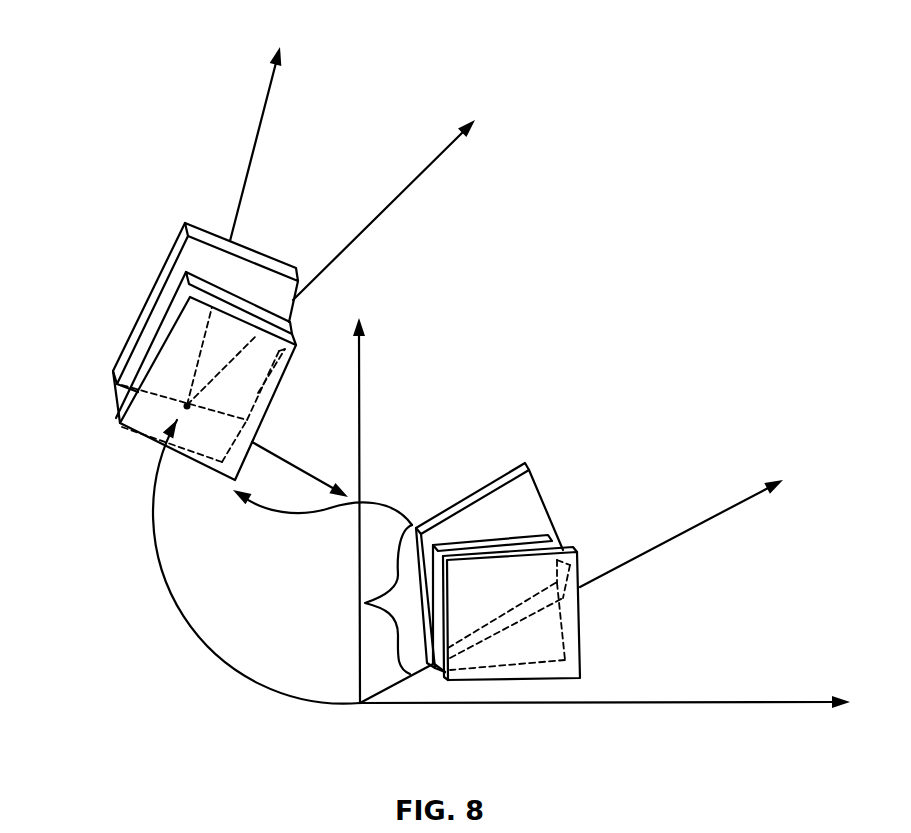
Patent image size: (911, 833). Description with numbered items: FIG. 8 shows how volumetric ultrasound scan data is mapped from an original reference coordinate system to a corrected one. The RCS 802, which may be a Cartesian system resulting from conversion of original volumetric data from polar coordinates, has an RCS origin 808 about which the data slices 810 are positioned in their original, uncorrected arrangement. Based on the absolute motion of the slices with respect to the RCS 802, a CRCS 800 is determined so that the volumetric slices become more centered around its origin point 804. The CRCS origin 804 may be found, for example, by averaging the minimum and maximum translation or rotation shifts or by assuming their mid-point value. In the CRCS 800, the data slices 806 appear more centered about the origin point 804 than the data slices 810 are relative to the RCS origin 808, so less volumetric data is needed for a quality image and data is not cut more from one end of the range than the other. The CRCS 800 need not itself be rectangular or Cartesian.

The corrected reference coordinate system (CRCS) 800 is at (145, 110).
The reference coordinate system (RCS) 802 is at (625, 452).
The CRCS origin point 804 is at (184, 408).
The data slices 806 is at (112, 223).
The RCS origin 808 is at (360, 704).
The data slices 810 is at (365, 603).